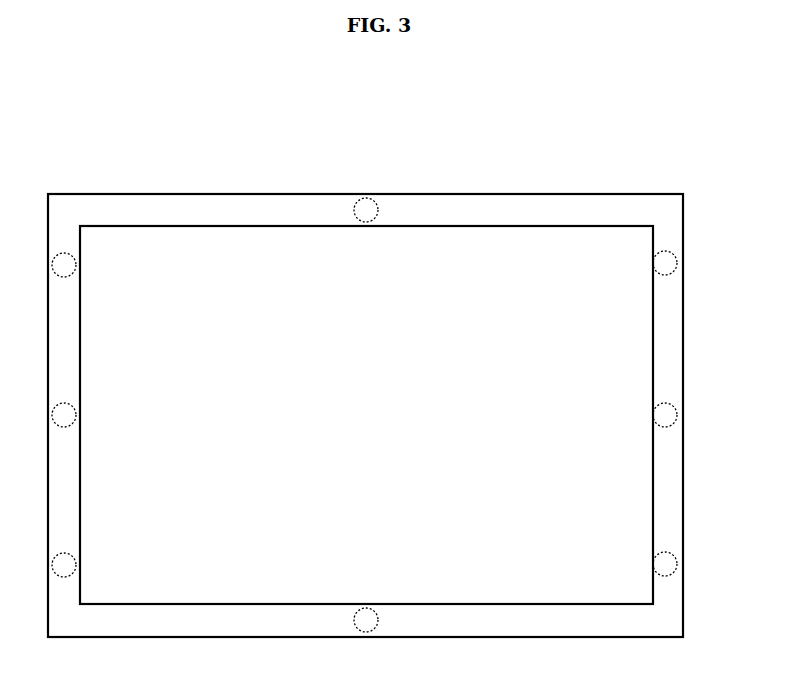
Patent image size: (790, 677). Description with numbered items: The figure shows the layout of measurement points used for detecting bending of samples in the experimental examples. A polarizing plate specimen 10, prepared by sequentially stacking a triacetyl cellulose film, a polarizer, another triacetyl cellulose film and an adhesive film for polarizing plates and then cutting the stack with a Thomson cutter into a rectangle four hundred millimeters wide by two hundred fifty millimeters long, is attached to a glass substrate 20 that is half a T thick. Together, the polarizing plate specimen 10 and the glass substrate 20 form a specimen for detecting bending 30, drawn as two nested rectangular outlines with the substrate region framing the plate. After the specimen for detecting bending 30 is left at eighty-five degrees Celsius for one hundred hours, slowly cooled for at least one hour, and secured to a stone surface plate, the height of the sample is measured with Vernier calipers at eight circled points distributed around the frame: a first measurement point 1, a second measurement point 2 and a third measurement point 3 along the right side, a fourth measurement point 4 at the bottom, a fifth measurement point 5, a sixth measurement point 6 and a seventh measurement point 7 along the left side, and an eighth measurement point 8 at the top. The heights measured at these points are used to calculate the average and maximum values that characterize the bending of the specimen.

The polarizing plate specimen 10 is at (542, 193).
The glass substrate 20 is at (487, 225).
The specimen for detecting bending 30 is at (633, 145).
The measurement point 1 is at (665, 263).
The measurement point 2 is at (665, 415).
The measurement point 3 is at (665, 564).
The measurement point 4 is at (366, 620).
The measurement point 5 is at (64, 565).
The measurement point 6 is at (64, 415).
The measurement point 7 is at (64, 265).
The measurement point 8 is at (366, 210).